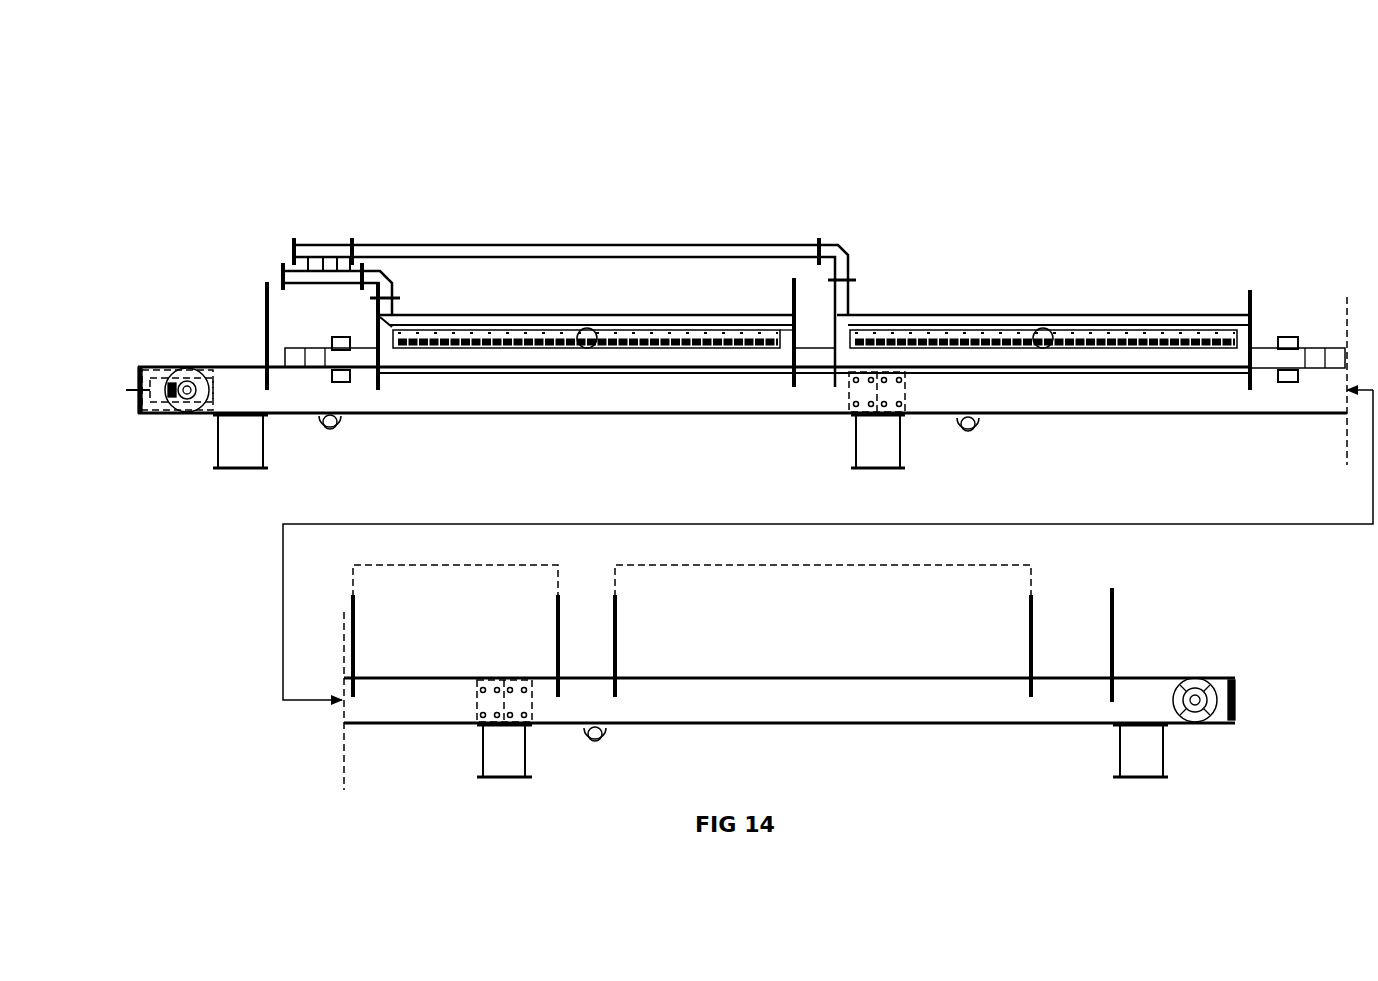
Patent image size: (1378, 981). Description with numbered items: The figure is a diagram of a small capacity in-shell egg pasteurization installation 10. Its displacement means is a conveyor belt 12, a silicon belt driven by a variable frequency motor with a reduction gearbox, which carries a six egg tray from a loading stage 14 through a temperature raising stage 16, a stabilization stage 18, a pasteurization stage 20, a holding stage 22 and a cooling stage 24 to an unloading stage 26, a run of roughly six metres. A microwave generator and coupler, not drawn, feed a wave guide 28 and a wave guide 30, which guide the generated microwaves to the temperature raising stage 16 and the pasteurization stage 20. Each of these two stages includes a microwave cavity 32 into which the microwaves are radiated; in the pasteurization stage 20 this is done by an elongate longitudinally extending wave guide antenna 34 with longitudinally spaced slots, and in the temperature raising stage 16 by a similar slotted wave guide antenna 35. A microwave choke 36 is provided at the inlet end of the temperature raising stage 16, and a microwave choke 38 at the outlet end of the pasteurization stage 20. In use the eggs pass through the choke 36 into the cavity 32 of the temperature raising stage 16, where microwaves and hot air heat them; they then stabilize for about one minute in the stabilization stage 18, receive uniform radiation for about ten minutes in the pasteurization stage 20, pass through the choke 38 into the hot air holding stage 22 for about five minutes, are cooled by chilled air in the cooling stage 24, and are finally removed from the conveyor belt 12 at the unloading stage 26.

The in-shell egg pasteurization installation 10 is at (830, 198).
The conveyor belt 12 is at (210, 365).
The loading stage 14 is at (240, 356).
The temperature raising stage 16 is at (620, 300).
The stabilization stage 18 is at (812, 340).
The pasteurization stage 20 is at (1060, 300).
The holding stage 22 is at (455, 631).
The cooling stage 24 is at (823, 631).
The unloading stage 26 is at (1057, 625).
The wave guide 28 is at (388, 285).
The wave guide 30 is at (553, 250).
The microwave cavity 32 is at (640, 360).
The wave guide antenna 34 is at (1110, 320).
The wave guide antenna 35 is at (480, 322).
The microwave choke 36 is at (335, 343).
The microwave choke 38 is at (1288, 342).